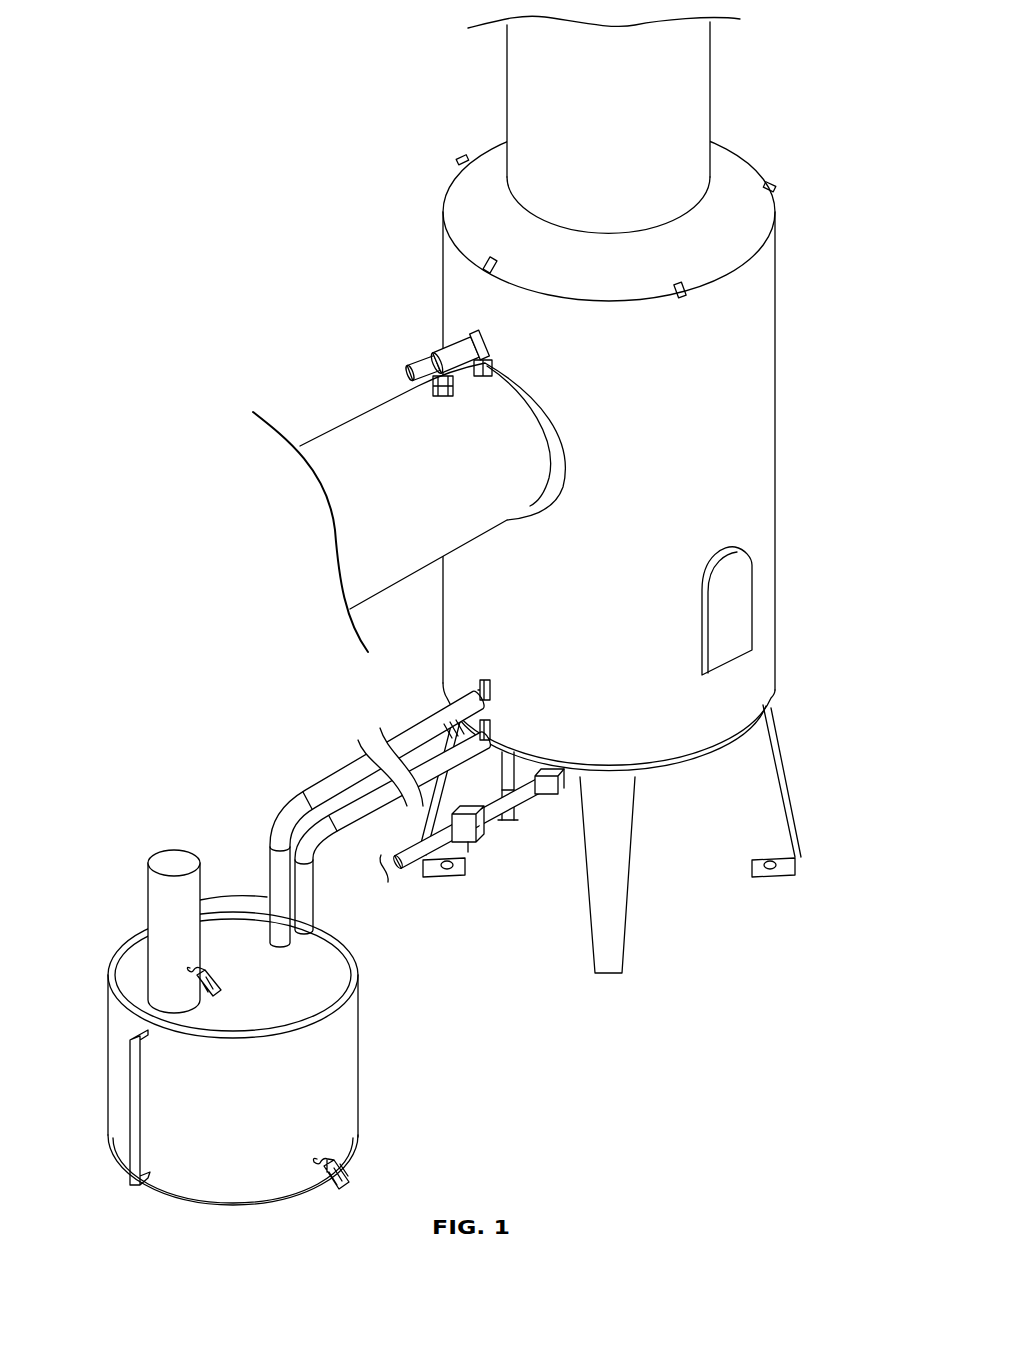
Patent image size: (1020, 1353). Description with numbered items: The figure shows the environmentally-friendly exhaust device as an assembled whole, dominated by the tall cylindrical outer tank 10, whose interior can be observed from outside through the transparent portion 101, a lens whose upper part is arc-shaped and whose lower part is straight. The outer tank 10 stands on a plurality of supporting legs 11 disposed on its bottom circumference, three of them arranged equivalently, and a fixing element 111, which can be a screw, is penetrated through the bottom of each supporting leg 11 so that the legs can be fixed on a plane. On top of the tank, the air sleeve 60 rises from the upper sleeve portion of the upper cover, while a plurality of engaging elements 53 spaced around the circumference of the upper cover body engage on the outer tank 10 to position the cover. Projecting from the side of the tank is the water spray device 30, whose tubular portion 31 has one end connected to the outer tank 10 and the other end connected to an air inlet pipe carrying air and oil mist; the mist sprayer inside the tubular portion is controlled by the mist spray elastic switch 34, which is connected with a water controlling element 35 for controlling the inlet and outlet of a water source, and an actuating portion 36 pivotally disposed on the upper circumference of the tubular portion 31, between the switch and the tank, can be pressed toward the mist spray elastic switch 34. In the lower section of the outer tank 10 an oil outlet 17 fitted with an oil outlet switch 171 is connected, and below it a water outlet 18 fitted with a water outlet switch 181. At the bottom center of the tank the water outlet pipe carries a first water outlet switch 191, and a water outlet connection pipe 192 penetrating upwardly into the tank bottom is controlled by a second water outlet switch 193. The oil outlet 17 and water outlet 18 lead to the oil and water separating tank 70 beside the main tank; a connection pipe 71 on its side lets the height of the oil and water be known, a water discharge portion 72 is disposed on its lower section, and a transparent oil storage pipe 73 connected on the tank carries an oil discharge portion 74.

The outer tank 10 is at (775, 472).
The transparent portion 101 is at (733, 608).
The supporting legs 11 is at (790, 862).
The fixing element 111 is at (447, 874).
The oil outlet 17 is at (380, 799).
The oil outlet switch 171 is at (480, 683).
The water outlet 18 is at (352, 807).
The water outlet switch 181 is at (512, 772).
The first water outlet switch 191 is at (587, 792).
The water outlet connection pipe 192 is at (522, 798).
The second water outlet switch 193 is at (474, 840).
The water spray device 30 is at (360, 402).
The tubular portion 31 is at (328, 428).
The mist spray elastic switch 34 is at (466, 345).
The water controlling element 35 is at (418, 388).
The actuating portion 36 is at (480, 343).
The engaging elements 53 is at (462, 160).
The air sleeve 60 is at (712, 72).
The oil and water separating tank 70 is at (315, 1057).
The connection pipe 71 is at (130, 1160).
The water discharge portion 72 is at (347, 1185).
The transparent oil storage pipe 73 is at (155, 905).
The oil discharge portion 74 is at (205, 985).